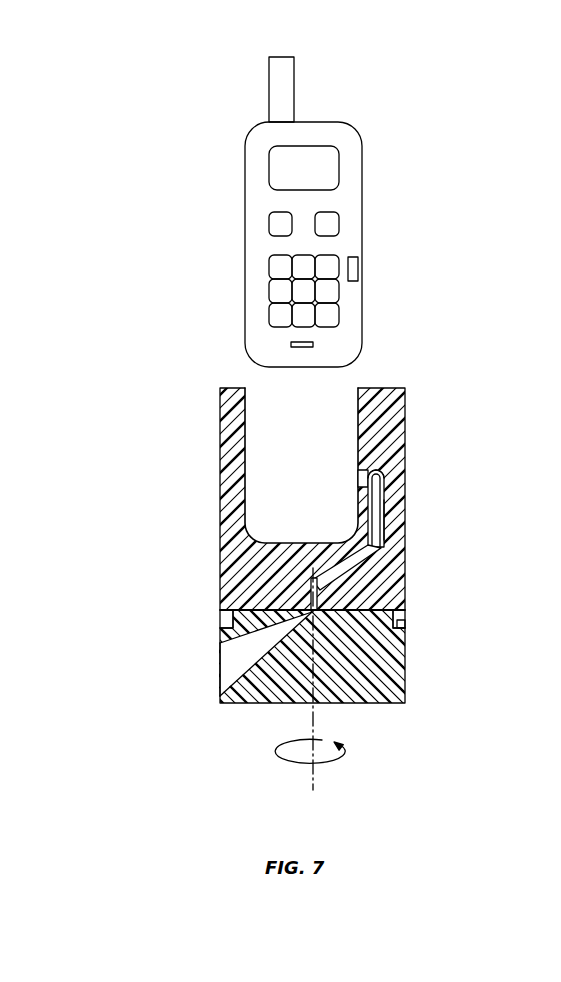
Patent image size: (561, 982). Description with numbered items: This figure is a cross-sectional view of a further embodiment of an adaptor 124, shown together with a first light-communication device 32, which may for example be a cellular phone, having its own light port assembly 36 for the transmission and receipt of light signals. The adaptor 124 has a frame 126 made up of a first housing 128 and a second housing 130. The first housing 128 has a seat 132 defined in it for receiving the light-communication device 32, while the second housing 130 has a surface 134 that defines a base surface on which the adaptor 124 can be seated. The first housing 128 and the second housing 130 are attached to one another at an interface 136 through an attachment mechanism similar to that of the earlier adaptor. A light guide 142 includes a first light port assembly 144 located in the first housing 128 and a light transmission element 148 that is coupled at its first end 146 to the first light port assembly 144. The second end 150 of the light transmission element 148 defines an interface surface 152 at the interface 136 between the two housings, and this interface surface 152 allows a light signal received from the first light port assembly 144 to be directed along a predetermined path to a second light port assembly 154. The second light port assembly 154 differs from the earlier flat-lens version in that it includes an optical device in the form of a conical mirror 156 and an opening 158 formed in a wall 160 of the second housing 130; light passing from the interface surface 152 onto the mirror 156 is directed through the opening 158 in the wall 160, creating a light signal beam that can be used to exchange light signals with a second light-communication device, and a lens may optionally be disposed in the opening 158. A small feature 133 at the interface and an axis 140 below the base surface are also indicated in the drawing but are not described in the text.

The first light-communication device 32 is at (348, 185).
The light port assembly 36 is at (358, 268).
The adaptor 124 is at (410, 358).
The frame 126 is at (105, 385).
The first housing 128 is at (187, 485).
The second housing 130 is at (232, 612).
The seat 132 is at (318, 456).
The alignment recess 133 is at (414, 626).
The surface 134 is at (376, 704).
The interface 136 is at (397, 612).
The axis of rotation 140 is at (312, 777).
The light guide 142 is at (392, 520).
The first light port assembly 144 is at (382, 476).
The first end 146 is at (388, 492).
The light transmission element 148 is at (348, 556).
The second end 150 is at (334, 589).
The interface surface 152 is at (312, 609).
The second light port assembly 154 is at (211, 672).
The conical mirror 156 is at (222, 695).
The opening 158 is at (219, 642).
The wall 160 is at (224, 622).